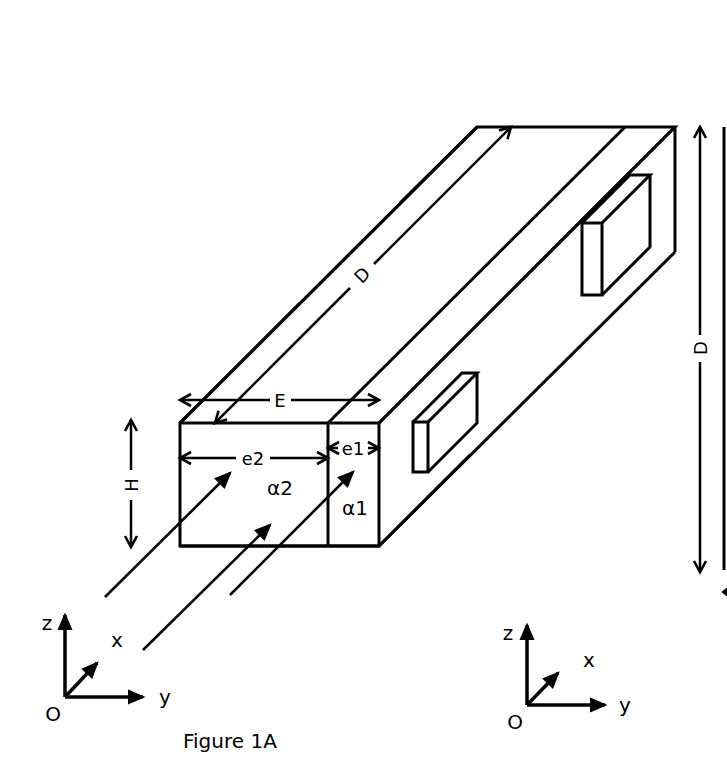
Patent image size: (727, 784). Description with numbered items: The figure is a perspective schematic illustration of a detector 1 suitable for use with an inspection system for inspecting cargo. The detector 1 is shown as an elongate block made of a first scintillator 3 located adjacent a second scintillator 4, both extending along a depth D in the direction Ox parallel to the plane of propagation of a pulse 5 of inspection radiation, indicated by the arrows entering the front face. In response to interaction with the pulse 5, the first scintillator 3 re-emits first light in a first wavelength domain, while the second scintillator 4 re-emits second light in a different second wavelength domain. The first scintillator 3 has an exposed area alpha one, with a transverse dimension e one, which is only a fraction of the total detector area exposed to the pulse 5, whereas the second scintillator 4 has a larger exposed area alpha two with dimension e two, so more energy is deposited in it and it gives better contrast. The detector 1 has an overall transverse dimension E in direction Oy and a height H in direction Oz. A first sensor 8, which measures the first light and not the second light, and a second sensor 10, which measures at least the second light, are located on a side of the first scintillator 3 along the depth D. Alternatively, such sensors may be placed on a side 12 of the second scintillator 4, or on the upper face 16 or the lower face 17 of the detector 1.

The detector 1 is at (207, 350).
The first scintillator 3 is at (527, 275).
The second scintillator 4 is at (328, 275).
The pulse of inspection radiation 5 is at (302, 570).
The first sensor 8 is at (462, 432).
The second sensor 10 is at (626, 248).
The side of the second scintillator 12 is at (358, 245).
The upper face 16 is at (428, 193).
The lower face 17 is at (418, 510).